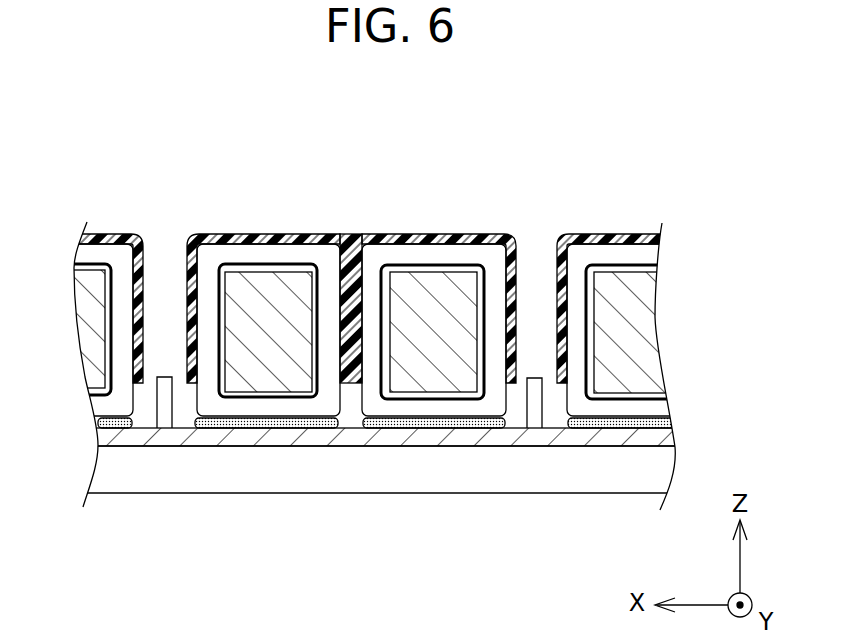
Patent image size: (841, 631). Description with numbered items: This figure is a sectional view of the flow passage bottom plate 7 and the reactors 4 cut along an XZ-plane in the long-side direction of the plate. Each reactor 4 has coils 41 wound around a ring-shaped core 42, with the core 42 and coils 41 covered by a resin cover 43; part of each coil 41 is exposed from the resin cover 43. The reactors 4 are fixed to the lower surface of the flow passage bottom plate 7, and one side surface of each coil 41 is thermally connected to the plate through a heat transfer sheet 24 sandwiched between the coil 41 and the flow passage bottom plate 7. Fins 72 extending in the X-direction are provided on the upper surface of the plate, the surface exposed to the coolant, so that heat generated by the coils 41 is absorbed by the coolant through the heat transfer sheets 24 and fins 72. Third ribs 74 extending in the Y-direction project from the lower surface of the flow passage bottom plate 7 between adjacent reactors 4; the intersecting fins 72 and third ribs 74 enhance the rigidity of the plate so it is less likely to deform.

The reactor 4 is at (368, 263).
The coil 41 is at (263, 250).
The core 42 is at (420, 285).
The resin cover 43 is at (487, 233).
The flow passage bottom plate 7 is at (359, 469).
The fin 72 is at (346, 483).
The third rib 74 is at (160, 404).
The heat transfer sheet 24 is at (273, 422).